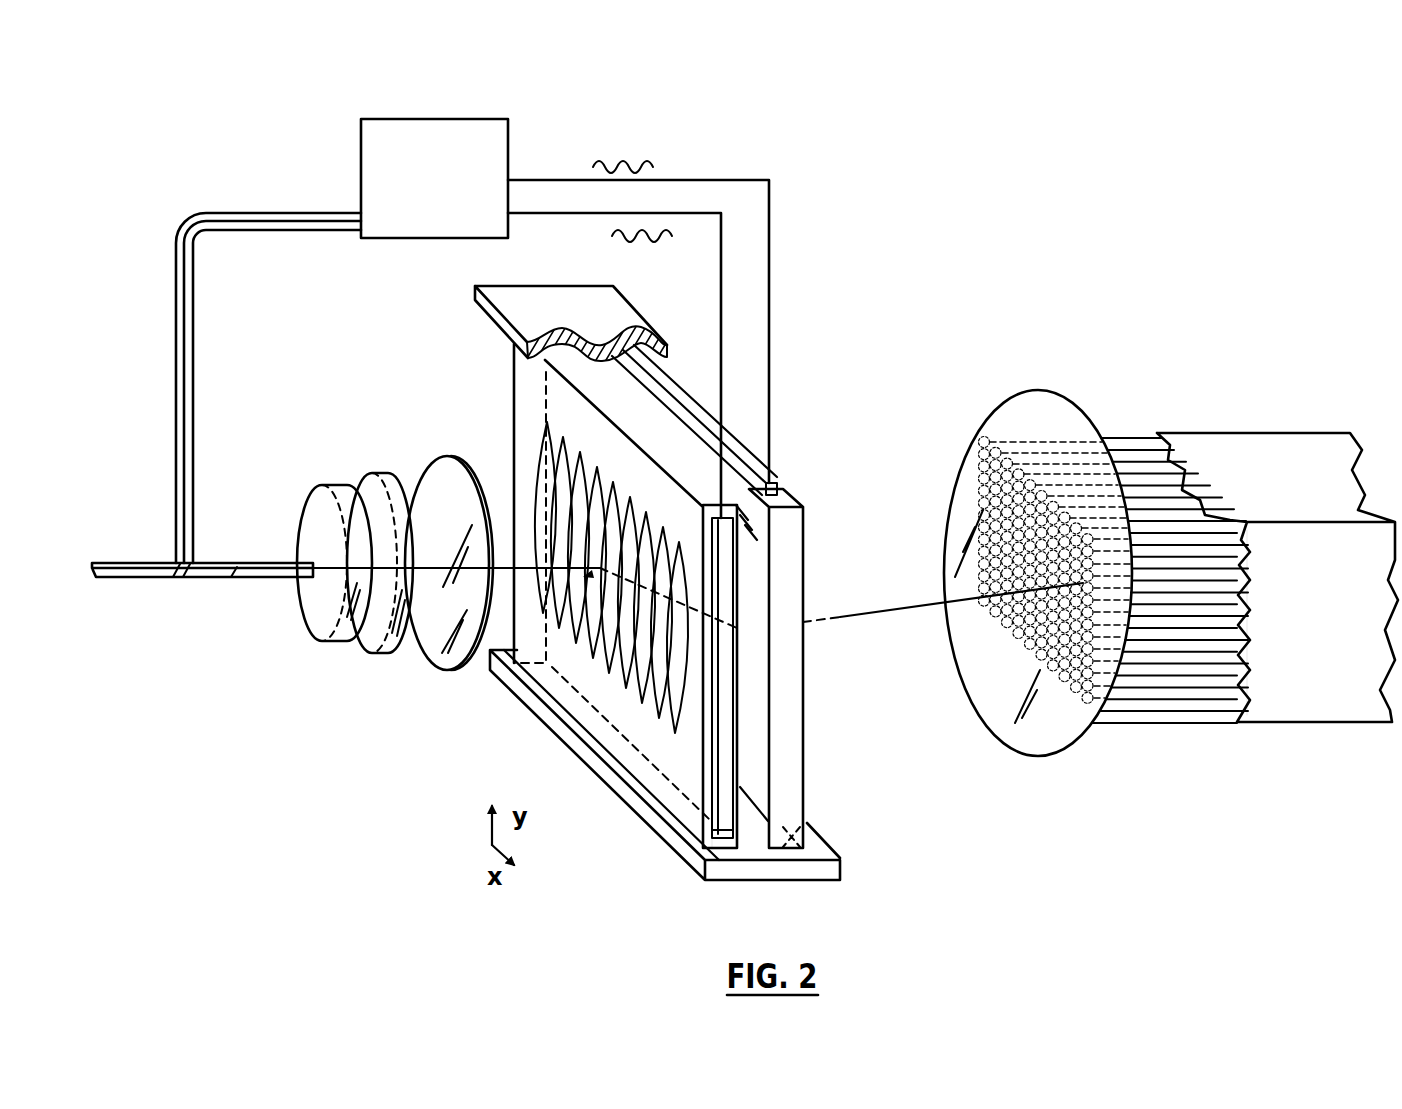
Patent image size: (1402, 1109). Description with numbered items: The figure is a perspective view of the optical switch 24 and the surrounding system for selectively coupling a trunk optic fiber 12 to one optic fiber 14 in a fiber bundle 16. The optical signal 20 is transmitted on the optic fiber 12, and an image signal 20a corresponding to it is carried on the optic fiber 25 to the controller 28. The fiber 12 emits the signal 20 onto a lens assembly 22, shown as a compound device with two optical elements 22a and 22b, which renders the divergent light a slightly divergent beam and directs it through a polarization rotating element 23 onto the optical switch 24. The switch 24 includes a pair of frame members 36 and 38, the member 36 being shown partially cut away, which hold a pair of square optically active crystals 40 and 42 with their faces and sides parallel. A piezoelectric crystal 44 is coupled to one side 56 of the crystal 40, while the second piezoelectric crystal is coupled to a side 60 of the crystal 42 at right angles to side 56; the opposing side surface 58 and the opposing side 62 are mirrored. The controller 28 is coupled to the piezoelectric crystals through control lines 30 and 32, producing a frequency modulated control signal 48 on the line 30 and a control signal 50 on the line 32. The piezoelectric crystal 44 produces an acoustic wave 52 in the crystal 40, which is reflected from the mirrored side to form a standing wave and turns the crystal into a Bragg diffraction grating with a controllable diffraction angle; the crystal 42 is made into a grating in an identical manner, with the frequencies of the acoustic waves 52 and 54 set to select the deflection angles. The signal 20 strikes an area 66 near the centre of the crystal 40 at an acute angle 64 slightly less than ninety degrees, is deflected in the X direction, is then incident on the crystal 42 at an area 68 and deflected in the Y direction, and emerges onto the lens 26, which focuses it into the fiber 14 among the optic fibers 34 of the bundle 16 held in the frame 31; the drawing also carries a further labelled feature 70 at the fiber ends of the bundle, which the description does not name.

The optic fiber 12 is at (103, 580).
The optic fiber 14 is at (1213, 578).
The fiber bundle 16 is at (1115, 432).
The optical signal 20 is at (232, 580).
The image signal 20a is at (184, 338).
The lens assembly 22 is at (345, 562).
The optical element 22a is at (318, 640).
The optical element 22b is at (372, 652).
The polarization rotating element 23 is at (428, 670).
The optical switch 24 is at (778, 322).
The optic fiber 25 is at (176, 298).
The lens 26 is at (1040, 762).
The controller 28 is at (508, 128).
The control line 30 is at (557, 216).
The frame 31 is at (1210, 440).
The control line 32 is at (760, 178).
The optic fibers 34 is at (1190, 680).
The frame member 36 is at (630, 320).
The frame member 38 is at (835, 875).
The optically active crystal 40 is at (548, 368).
The optically active crystal 42 is at (755, 703).
The piezoelectric crystal 44 is at (698, 800).
The control signal 48 is at (641, 238).
The control signal 50 is at (643, 166).
The acoustic wave 52 is at (630, 683).
The acoustic wave 54 is at (735, 458).
The side 56 is at (700, 865).
The side surface 58 is at (545, 392).
The side 60 is at (790, 496).
The side 62 is at (807, 820).
The acute angle 64 is at (585, 630).
The area 66 is at (628, 594).
The area 68 is at (755, 645).
The fiber array 70 is at (962, 488).